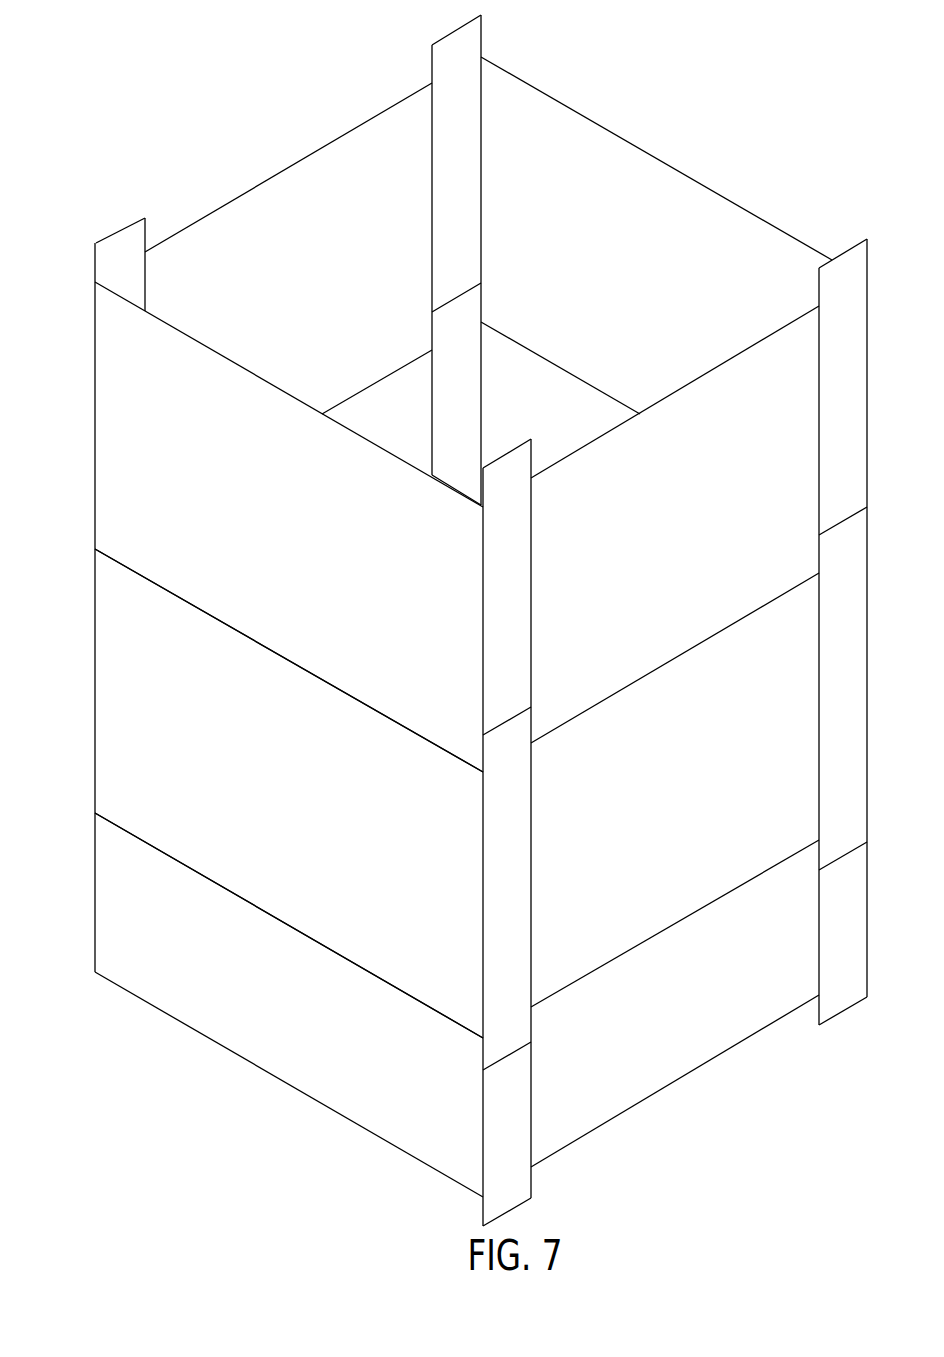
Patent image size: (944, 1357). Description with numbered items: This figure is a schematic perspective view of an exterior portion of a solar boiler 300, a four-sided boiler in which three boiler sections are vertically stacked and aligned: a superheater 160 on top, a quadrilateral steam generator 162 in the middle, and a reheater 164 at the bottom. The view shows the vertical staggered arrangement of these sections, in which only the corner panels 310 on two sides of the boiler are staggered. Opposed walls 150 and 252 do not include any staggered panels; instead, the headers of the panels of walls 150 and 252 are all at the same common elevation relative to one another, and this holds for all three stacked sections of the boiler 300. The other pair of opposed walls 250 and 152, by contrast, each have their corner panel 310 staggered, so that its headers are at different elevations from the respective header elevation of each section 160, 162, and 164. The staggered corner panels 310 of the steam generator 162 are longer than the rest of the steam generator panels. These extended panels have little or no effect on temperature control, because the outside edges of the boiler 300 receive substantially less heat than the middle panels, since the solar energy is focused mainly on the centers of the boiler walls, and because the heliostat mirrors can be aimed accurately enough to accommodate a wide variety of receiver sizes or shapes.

The wall 150 is at (439, 627).
The wall 152 is at (685, 1077).
The superheater 160 is at (277, 533).
The steam generator 162 is at (277, 798).
The reheater 164 is at (277, 1019).
The wall 250 is at (280, 172).
The wall 252 is at (663, 160).
The solar boiler 300 is at (456, 620).
The corner panel 310 is at (109, 278).